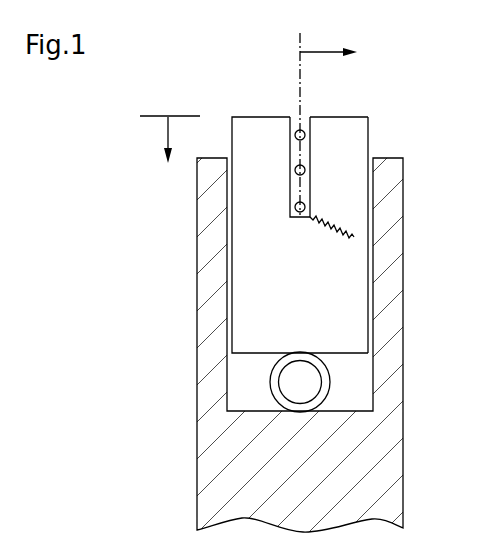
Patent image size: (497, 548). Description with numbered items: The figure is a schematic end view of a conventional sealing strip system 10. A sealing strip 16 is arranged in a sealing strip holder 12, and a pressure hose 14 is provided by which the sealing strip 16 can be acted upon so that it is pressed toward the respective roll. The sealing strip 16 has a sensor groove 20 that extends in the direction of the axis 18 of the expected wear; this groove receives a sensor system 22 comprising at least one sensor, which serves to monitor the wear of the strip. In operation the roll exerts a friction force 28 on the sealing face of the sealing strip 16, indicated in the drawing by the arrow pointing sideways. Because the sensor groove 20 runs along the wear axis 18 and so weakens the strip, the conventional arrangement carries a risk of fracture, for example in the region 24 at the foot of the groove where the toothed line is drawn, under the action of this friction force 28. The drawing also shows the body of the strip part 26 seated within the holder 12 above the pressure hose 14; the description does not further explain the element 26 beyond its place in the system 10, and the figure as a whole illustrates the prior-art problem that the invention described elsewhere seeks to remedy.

The sealing strip system 10 is at (402, 85).
The sealing strip holder 12 is at (215, 297).
The pressure hose 14 is at (325, 385).
The sealing strip 16 is at (347, 292).
The axis of the expected wear 18 is at (185, 116).
The sensor groove 20 is at (303, 152).
The sensor system 22 is at (303, 120).
The region 24 is at (322, 245).
The slide body 26 is at (260, 117).
The friction force 28 is at (305, 52).